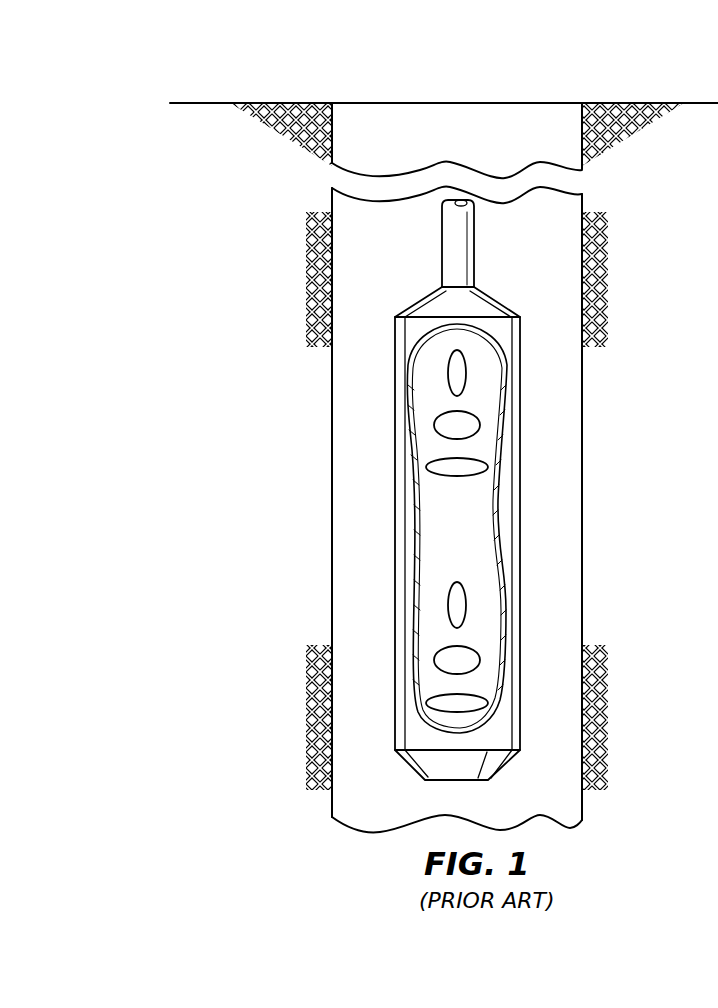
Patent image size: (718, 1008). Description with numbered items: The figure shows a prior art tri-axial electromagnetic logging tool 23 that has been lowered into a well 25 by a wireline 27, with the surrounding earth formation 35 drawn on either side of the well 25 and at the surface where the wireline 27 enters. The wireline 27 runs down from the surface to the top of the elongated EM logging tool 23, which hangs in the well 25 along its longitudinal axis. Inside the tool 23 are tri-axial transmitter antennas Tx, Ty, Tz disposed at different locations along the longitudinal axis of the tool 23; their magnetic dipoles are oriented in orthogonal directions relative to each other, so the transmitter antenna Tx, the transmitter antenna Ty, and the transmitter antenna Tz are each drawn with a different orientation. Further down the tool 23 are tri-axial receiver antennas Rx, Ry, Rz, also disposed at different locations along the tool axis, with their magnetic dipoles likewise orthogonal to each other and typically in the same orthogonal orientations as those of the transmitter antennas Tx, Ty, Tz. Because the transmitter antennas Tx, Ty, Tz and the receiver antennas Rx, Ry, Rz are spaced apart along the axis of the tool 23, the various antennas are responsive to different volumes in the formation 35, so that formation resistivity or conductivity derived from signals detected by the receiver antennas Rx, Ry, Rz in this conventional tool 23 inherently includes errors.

The earth surface / formation 35 is at (203, 102).
The well 25 is at (392, 130).
The wireline 27 is at (463, 200).
The tri-axial EM logging tool 23 is at (520, 427).
The tri-axial transmitter antenna Tx is at (447, 374).
The tri-axial transmitter antenna Ty is at (435, 426).
The tri-axial transmitter antenna Tz is at (428, 466).
The tri-axial receiver antenna Rx is at (447, 605).
The tri-axial receiver antenna Ry is at (435, 661).
The tri-axial receiver antenna Rz is at (427, 703).